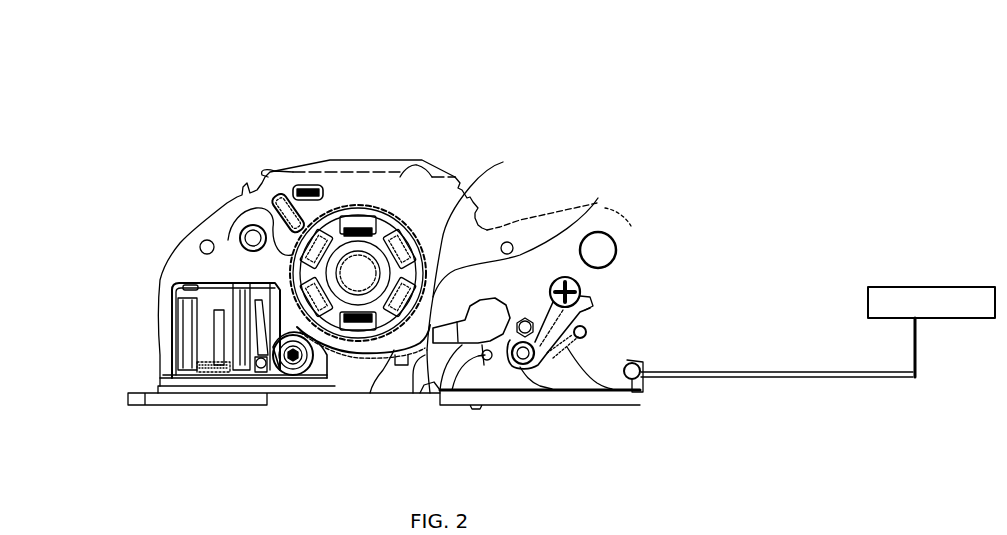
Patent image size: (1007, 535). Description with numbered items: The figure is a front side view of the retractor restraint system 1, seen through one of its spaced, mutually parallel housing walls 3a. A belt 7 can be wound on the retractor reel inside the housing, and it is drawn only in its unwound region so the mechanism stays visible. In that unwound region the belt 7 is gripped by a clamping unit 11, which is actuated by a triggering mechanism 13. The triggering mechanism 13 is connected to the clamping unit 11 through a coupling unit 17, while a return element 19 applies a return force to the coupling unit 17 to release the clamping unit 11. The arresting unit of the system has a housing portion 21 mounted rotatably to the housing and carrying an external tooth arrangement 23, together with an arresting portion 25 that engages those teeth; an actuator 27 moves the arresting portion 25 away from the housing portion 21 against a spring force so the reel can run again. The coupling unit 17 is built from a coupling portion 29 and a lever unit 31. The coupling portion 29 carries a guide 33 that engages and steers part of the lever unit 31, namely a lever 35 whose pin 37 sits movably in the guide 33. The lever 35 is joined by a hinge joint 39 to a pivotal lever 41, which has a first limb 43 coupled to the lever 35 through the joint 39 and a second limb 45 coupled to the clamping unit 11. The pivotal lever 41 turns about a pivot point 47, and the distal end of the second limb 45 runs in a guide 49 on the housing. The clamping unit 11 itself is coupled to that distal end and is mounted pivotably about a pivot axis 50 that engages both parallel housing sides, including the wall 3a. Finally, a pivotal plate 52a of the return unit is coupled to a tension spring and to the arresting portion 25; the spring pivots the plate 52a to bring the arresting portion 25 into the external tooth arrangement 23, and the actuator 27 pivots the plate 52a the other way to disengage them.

The retractor restraint system 1 is at (653, 192).
The housing wall 3a is at (217, 226).
The belt 7 is at (728, 377).
The clamping unit 11 is at (610, 222).
The triggering mechanism 13 is at (413, 188).
The coupling unit 17 is at (517, 393).
The return element 19 is at (620, 373).
The housing portion 21 is at (378, 252).
The external tooth arrangement 23 is at (503, 162).
The arresting portion 25 is at (285, 378).
The actuator 27 is at (220, 327).
The coupling portion 29 is at (394, 365).
The lever unit 31 is at (598, 198).
The guide 33 is at (311, 185).
The lever 35 is at (425, 358).
The pin 37 is at (527, 300).
The hinge joint 39 is at (438, 393).
The pivotal lever 41 is at (588, 305).
The first limb 43 is at (500, 365).
The second limb 45 is at (600, 319).
The pivot point 47 is at (552, 388).
The guide 49 is at (580, 290).
The pivot axis 50 is at (616, 248).
The pivotal plate 52a is at (240, 313).